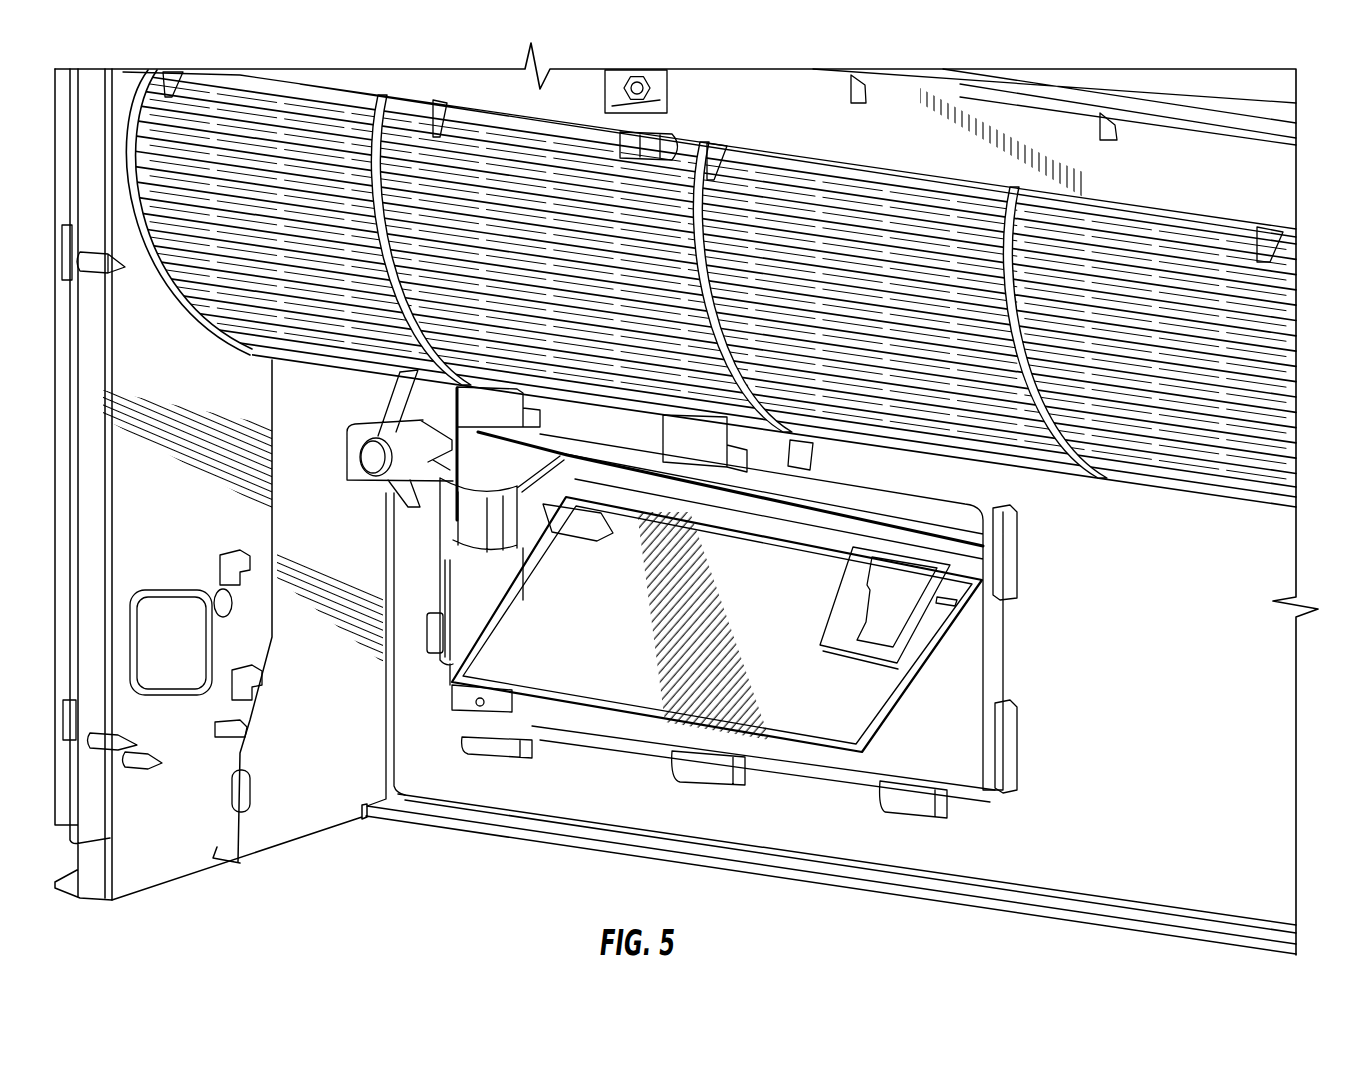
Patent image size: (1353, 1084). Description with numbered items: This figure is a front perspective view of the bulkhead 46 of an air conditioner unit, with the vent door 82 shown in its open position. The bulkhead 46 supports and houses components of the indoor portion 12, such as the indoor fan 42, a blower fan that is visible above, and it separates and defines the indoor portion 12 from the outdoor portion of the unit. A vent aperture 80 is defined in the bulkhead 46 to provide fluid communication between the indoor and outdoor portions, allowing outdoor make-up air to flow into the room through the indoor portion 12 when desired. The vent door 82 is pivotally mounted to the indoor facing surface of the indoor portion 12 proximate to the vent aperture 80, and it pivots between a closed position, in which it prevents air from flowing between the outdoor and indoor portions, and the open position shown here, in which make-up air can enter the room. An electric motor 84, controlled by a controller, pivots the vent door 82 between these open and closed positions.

The indoor portion 12 is at (413, 852).
The indoor fan 42 is at (1280, 360).
The bulkhead 46 is at (1257, 661).
The vent aperture 80 is at (920, 738).
The vent door 82 is at (860, 690).
The electric motor 84 is at (470, 605).